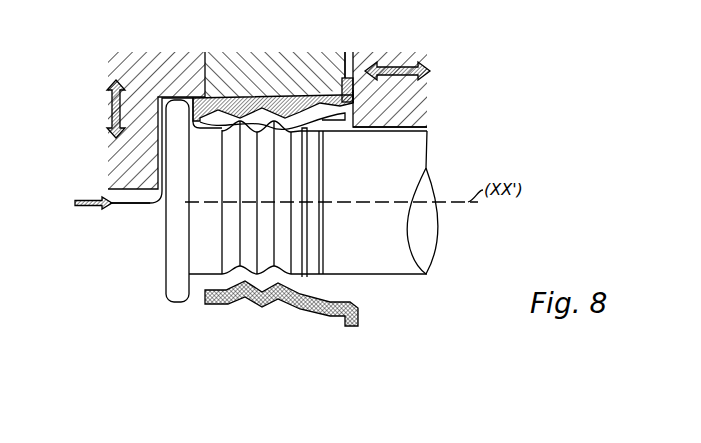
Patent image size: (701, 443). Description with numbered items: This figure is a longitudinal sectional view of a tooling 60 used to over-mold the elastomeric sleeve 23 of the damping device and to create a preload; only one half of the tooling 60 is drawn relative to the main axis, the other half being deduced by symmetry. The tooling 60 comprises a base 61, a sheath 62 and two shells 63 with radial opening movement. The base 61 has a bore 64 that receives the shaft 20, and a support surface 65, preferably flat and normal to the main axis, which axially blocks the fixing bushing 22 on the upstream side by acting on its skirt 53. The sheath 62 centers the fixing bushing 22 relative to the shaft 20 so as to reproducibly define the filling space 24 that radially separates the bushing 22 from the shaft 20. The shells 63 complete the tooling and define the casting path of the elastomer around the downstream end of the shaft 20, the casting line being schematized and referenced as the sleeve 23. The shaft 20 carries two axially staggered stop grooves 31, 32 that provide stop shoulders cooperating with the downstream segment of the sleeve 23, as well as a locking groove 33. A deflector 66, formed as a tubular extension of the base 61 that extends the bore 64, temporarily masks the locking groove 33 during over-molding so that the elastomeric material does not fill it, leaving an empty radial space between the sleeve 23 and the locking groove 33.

The shaft 20 is at (421, 240).
The fixing bushing 22 is at (330, 310).
The sleeve 23 is at (130, 206).
The filling space 24 is at (331, 288).
The stop groove 31 is at (268, 268).
The stop groove 32 is at (228, 268).
The locking groove 33 is at (312, 235).
The skirt 53 is at (350, 76).
The tooling 60 is at (422, 37).
The base 61 is at (408, 113).
The sheath 62 is at (253, 62).
The shell 63 is at (143, 72).
The bore 64 is at (418, 127).
The support surface 65 is at (364, 99).
The deflector 66 is at (282, 120).